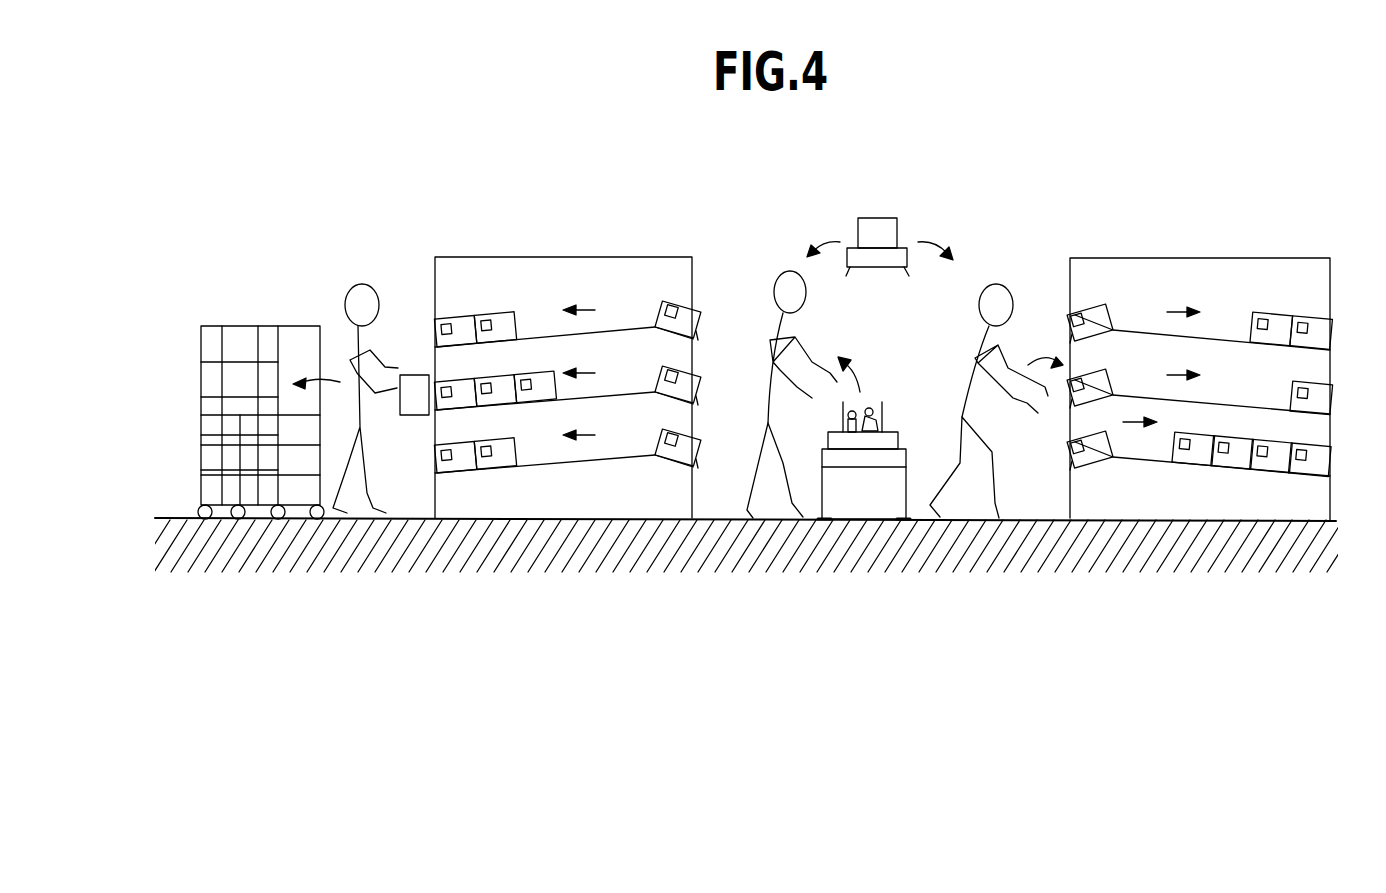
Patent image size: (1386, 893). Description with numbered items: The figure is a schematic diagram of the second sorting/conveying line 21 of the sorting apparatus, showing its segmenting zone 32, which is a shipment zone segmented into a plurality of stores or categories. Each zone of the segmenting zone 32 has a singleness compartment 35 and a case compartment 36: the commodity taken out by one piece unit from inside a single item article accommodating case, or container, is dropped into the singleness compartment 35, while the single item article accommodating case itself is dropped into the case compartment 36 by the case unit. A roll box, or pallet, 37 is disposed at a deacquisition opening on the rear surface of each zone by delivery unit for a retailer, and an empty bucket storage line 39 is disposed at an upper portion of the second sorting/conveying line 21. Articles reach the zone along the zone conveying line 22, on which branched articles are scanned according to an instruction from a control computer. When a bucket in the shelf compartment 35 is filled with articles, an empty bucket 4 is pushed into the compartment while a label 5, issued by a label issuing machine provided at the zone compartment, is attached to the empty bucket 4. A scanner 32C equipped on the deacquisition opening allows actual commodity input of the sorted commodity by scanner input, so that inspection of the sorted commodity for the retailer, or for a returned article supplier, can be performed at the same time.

The second sorting/conveying line 21 is at (514, 206).
The segmenting zone 32 is at (883, 336).
The scanner 32C is at (413, 408).
The empty bucket 4 is at (671, 272).
The label 5 is at (666, 302).
The singleness compartment 35 is at (710, 267).
The case compartment 36 is at (710, 365).
The roll box, or pallet 37 is at (201, 340).
The empty bucket storage line 39 is at (880, 267).
The zone conveying line 22 is at (899, 438).